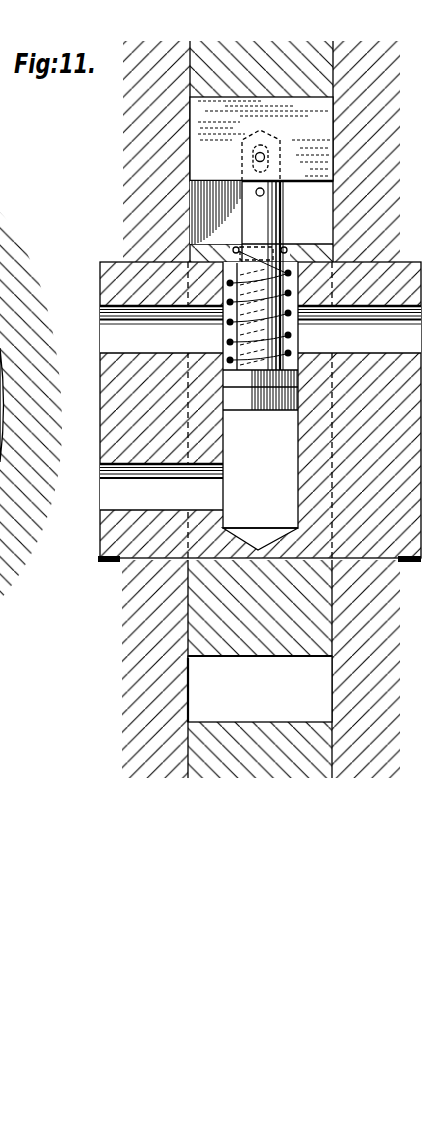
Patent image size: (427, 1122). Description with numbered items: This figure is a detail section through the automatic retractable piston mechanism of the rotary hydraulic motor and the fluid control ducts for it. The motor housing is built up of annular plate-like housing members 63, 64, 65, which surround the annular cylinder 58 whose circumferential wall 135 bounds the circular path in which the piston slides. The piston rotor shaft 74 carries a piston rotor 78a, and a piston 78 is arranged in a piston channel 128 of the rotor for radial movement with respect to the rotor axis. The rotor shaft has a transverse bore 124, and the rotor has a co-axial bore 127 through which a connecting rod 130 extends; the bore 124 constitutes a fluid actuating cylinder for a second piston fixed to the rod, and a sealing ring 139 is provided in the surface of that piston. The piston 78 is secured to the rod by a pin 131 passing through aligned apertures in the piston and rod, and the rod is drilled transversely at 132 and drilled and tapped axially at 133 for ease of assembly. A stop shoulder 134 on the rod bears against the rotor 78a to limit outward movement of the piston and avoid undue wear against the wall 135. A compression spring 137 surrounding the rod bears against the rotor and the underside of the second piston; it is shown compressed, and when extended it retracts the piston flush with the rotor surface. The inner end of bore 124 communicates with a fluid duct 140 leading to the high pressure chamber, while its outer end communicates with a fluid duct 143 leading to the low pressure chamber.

The annular cylinder 58 is at (207, 692).
The housing member 63 is at (158, 62).
The housing member 64 is at (240, 62).
The housing member 65 is at (362, 70).
The piston rotor shaft 74 is at (112, 262).
The piston 78 is at (298, 105).
The piston rotor 78a is at (268, 640).
The transverse bore 124 is at (298, 470).
The bore 127 is at (247, 245).
The piston channel 128 is at (207, 197).
The connecting rod 130 is at (247, 330).
The pin 131 is at (255, 158).
The transverse drilling 132 is at (265, 192).
The axial tapped hole 133 is at (262, 140).
The stop shoulder 134 is at (253, 263).
The circumferential wall 135 is at (31, 382).
The compression spring 137 is at (297, 347).
The sealing ring 139 is at (250, 388).
The fluid duct 140 is at (112, 497).
The fluid duct 143 is at (113, 340).